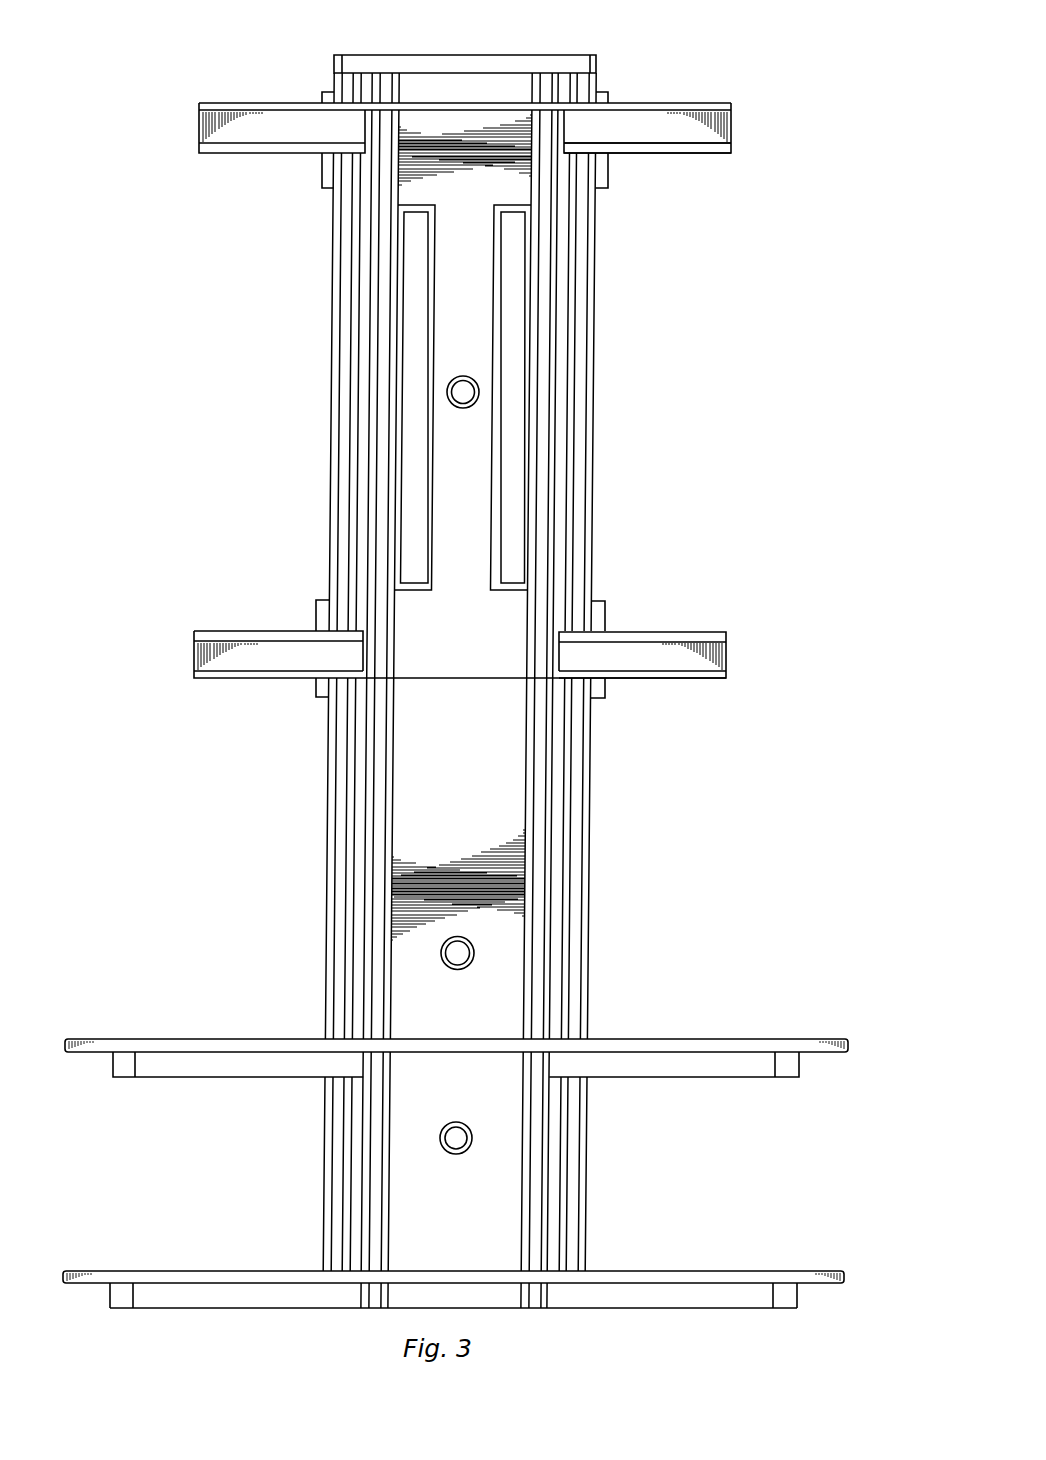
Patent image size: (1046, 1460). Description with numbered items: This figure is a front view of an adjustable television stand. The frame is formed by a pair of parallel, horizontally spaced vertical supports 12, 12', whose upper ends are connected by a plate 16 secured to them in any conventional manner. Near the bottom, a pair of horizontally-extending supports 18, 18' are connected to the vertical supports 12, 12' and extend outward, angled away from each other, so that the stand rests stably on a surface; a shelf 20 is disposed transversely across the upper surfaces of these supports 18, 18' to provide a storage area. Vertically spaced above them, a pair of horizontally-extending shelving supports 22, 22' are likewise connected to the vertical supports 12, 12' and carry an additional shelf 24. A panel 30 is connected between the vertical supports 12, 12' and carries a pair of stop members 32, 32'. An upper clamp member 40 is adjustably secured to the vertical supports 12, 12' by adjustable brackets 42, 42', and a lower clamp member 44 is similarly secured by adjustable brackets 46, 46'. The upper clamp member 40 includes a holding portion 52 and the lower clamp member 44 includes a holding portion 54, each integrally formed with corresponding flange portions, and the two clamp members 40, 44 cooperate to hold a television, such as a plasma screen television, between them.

The vertical support 12 is at (329, 690).
The vertical support 12' is at (594, 690).
The plate 16 is at (356, 55).
The horizontally-extending support 18 is at (130, 1322).
The horizontally-extending support 18' is at (776, 1323).
The shelf 20 is at (706, 1270).
The horizontally-extending shelving support 22 is at (238, 1091).
The horizontally-extending shelving support 22' is at (674, 1092).
The additional shelf 24 is at (710, 1038).
The panel 30 is at (445, 784).
The stop member 32 is at (418, 426).
The stop member 32' is at (504, 426).
The upper clamp member 40 is at (736, 128).
The adjustable bracket 42 is at (298, 146).
The adjustable bracket 42' is at (634, 147).
The lower clamp member 44 is at (730, 657).
The adjustable bracket 46 is at (294, 641).
The adjustable bracket 46' is at (629, 643).
The holding portion 52 is at (693, 155).
The holding portion 54 is at (690, 680).